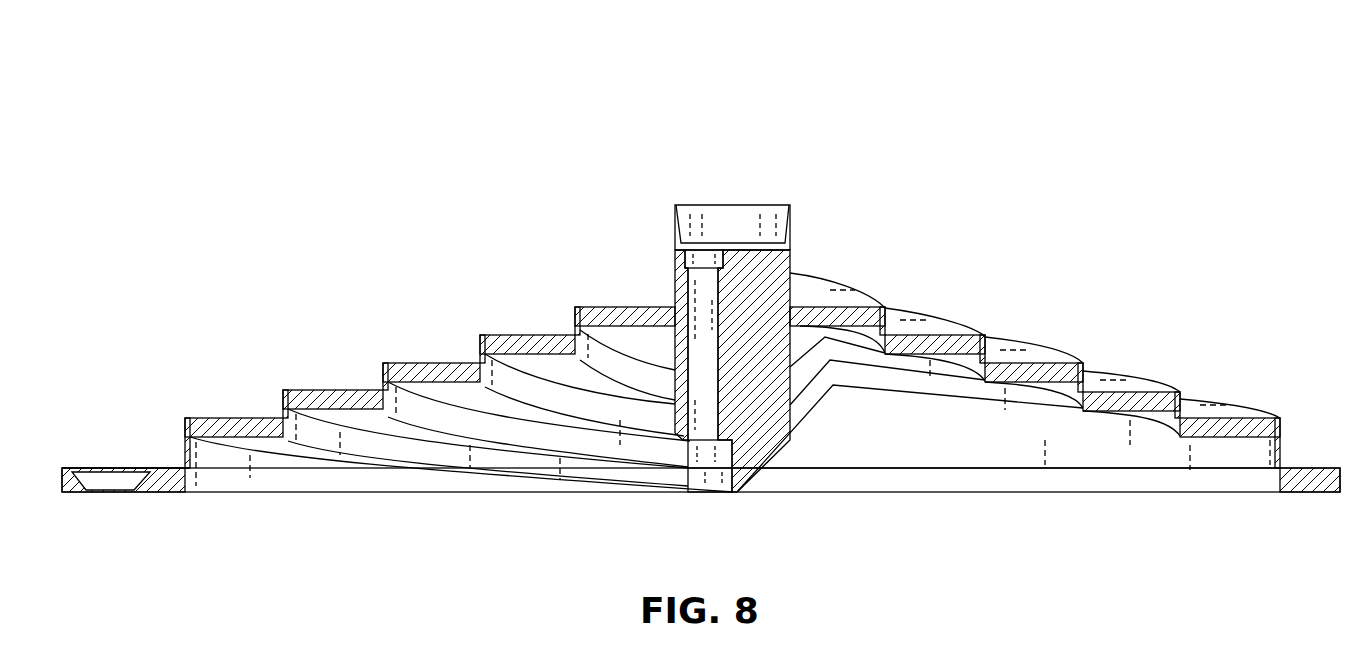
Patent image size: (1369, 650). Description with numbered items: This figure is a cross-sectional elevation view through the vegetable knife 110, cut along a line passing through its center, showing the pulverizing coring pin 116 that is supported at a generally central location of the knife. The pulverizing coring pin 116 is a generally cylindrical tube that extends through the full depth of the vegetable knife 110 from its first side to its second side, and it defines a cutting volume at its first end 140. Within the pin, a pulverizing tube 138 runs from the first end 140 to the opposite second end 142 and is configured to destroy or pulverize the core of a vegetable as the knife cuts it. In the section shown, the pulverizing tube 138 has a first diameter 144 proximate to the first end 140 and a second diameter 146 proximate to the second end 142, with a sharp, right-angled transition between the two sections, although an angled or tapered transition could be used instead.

The vegetable knife 110 is at (1166, 86).
The pulverizing coring pin 116 is at (675, 266).
The pulverizing tube 138 is at (703, 303).
The first end 140 is at (716, 233).
The second end 142 is at (700, 434).
The first diameter 144 is at (728, 253).
The second diameter 146 is at (750, 325).